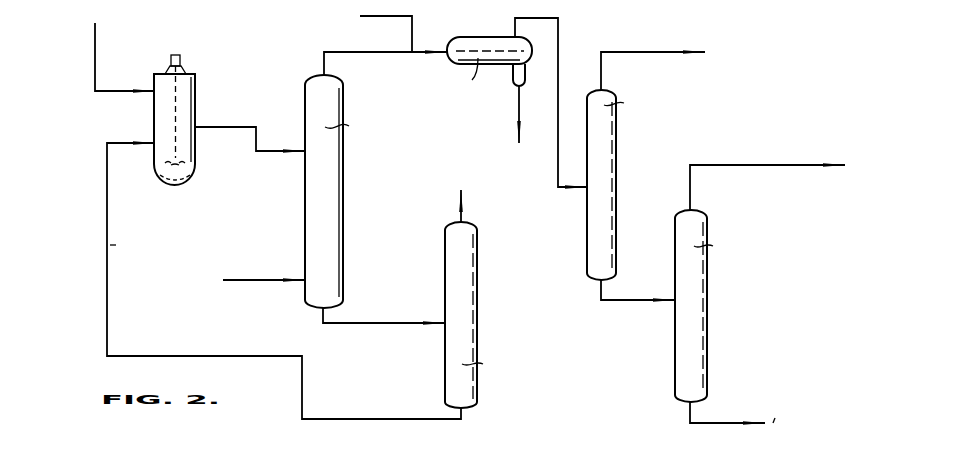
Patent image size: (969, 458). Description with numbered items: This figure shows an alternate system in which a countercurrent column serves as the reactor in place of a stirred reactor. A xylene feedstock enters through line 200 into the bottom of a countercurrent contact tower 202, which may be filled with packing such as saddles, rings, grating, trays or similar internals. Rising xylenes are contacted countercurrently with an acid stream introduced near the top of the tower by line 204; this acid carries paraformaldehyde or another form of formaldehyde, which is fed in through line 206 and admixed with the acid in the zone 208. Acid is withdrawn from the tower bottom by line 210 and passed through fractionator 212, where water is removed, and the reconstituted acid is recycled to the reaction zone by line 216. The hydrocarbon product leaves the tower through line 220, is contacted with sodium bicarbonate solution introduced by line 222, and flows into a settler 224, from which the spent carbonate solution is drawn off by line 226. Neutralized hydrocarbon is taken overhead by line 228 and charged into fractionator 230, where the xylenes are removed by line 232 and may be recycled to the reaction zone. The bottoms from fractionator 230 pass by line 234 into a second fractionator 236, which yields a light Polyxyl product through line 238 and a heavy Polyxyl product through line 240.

The line 200 is at (268, 274).
The countercurrent contact tower 202 is at (325, 181).
The line 204 is at (244, 125).
The line 206 is at (93, 61).
The zone 208 is at (196, 78).
The line 210 is at (393, 324).
The fractionator 212 is at (502, 292).
The line 216 is at (107, 204).
The line 220 is at (324, 56).
The line 222 is at (410, 32).
The settler 224 is at (478, 36).
The line 226 is at (519, 101).
The line 228 is at (560, 27).
The fractionator 230 is at (604, 240).
The line 232 is at (648, 53).
The line 234 is at (636, 302).
The second fractionator 236 is at (698, 298).
The line 238 is at (690, 178).
The line 240 is at (688, 416).